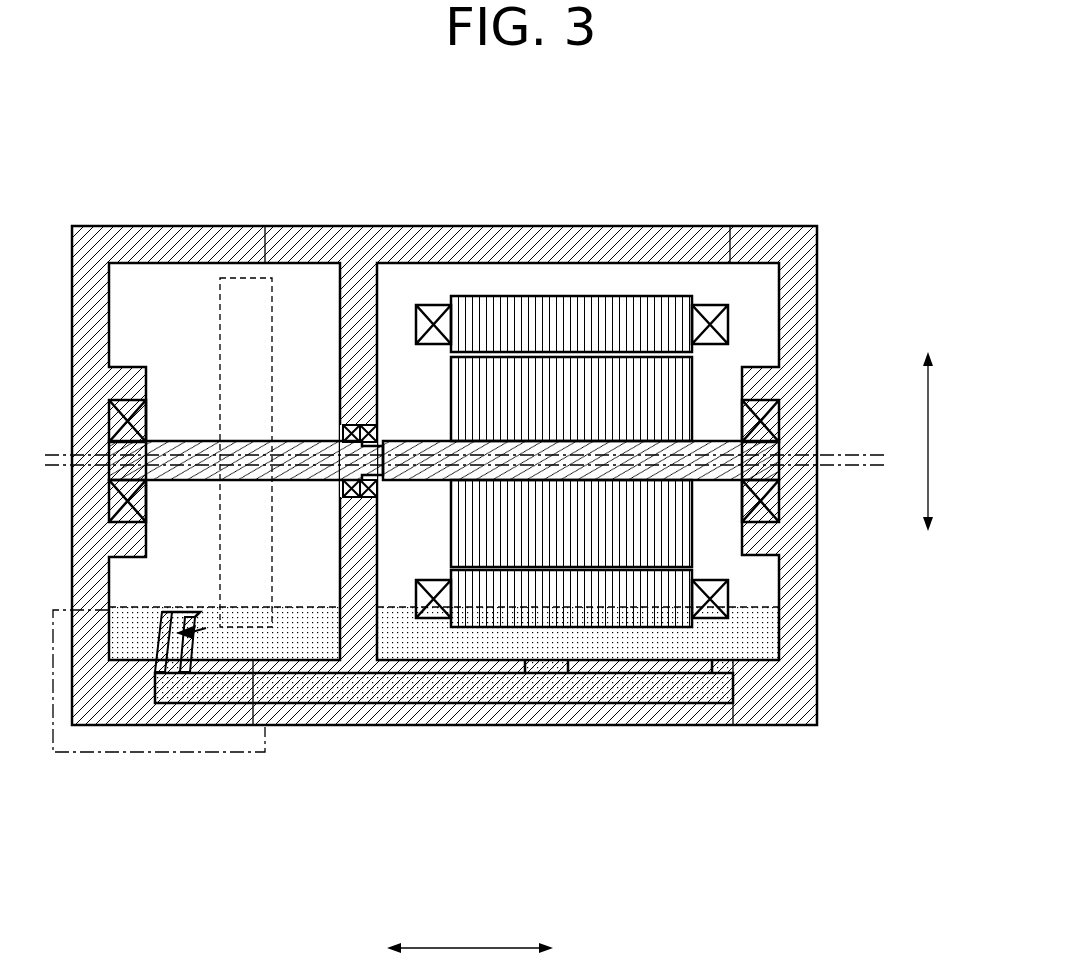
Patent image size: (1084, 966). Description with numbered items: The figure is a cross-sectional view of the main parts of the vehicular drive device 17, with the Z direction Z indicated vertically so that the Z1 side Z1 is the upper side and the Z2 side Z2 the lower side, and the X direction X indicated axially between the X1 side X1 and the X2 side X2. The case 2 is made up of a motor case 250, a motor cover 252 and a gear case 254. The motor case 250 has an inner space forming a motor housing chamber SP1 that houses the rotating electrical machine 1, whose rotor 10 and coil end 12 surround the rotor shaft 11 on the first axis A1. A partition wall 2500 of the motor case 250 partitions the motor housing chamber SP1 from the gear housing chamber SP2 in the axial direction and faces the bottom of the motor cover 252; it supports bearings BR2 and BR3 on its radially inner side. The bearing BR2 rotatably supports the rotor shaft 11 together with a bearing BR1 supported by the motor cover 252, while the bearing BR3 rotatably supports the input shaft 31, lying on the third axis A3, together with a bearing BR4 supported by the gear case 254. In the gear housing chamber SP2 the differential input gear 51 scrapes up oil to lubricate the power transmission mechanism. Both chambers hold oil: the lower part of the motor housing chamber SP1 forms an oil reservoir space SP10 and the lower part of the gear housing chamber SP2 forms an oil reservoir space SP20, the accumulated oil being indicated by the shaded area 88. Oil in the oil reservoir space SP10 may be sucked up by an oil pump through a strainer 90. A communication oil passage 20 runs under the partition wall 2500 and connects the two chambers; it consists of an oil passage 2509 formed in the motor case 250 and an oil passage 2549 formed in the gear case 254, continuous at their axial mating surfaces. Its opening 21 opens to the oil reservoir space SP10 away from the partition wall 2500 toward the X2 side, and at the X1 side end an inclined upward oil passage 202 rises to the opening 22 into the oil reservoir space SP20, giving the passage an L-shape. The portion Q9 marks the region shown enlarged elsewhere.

The rotating electrical machine 1 is at (617, 286).
The case 2 is at (444, 475).
The rotor 10 is at (703, 417).
The rotor shaft 11 is at (440, 448).
The coil end 12 is at (433, 312).
The vehicular drive device 17 is at (785, 178).
The communication oil passage 20 is at (685, 805).
The opening 21 is at (715, 683).
The opening 22 is at (178, 612).
The input shaft 31 is at (197, 448).
The differential input gear 51 is at (272, 330).
The shaded area 88 is at (762, 622).
The strainer 90 is at (570, 685).
The upward oil passage 202 is at (200, 628).
The motor case 250 is at (437, 227).
The motor cover 252 is at (800, 612).
The gear case 254 is at (92, 227).
The partition wall 2500 is at (350, 565).
The oil passage 2509 is at (570, 685).
The oil passage 2549 is at (210, 683).
The bearing BR1 is at (758, 402).
The bearing BR2 is at (380, 436).
The bearing BR3 is at (343, 432).
The bearing BR4 is at (146, 418).
The motor housing chamber SP1 is at (578, 461).
The gear housing chamber SP2 is at (224, 461).
The oil reservoir space SP10 is at (578, 633).
The oil reservoir space SP20 is at (224, 633).
The first axis A1 is at (845, 466).
The third axis A3 is at (852, 452).
The portion Q9 is at (85, 752).
The Z direction Z is at (939, 441).
The Z1 side Z1 is at (951, 340).
The Z2 side Z2 is at (951, 540).
The X direction X is at (470, 935).
The X1 side X1 is at (368, 948).
The X2 side X2 is at (576, 948).